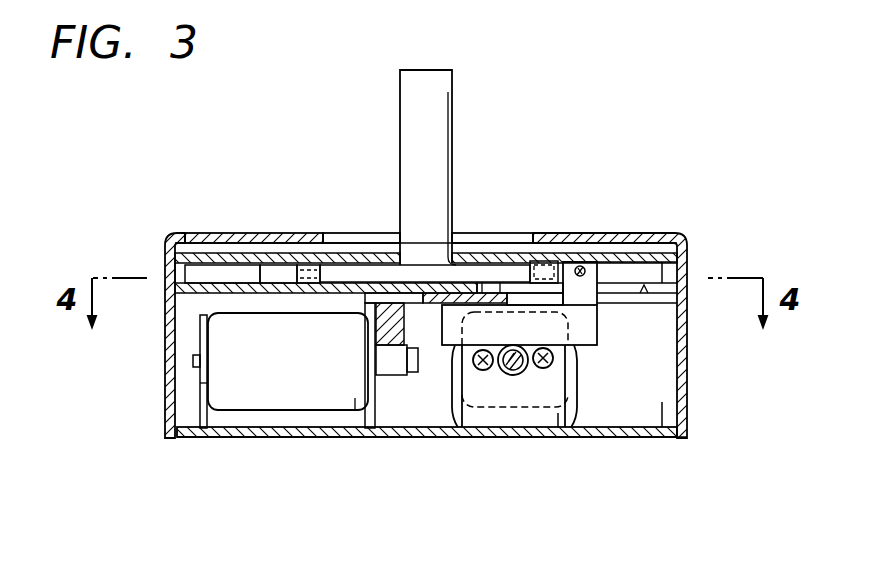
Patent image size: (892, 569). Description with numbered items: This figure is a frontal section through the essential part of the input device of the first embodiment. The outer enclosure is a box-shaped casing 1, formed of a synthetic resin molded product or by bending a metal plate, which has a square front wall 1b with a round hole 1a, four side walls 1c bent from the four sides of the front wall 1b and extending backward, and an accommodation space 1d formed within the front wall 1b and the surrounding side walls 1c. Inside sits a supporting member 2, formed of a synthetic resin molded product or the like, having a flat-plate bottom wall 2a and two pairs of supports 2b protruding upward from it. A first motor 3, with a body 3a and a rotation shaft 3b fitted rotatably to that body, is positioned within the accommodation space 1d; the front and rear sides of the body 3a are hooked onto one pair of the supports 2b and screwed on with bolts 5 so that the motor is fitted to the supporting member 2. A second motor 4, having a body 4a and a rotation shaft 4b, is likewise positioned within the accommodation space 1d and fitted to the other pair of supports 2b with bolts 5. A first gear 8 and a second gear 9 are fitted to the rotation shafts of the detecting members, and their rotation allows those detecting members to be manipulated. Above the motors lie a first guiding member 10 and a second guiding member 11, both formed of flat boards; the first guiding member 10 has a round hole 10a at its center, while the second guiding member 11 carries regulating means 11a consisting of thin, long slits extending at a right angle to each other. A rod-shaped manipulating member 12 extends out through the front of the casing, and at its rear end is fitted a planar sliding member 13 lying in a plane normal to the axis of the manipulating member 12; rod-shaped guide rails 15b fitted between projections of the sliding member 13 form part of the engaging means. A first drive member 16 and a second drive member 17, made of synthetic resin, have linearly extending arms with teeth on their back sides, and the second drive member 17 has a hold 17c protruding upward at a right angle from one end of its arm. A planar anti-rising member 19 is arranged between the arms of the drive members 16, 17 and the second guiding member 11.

The casing 1 is at (160, 233).
The round hole 1a is at (340, 240).
The front wall 1b is at (253, 233).
The side walls 1c is at (684, 378).
The accommodation space 1d is at (648, 437).
The supporting member 2 is at (332, 447).
The bottom wall 2a is at (270, 438).
The supports 2b is at (205, 410).
The first motor 3 is at (243, 420).
The body 3a is at (355, 398).
The rotation shaft 3b is at (193, 362).
The second motor 4 is at (586, 364).
The body 4a is at (452, 395).
The rotation shaft 4b is at (521, 395).
The bolts 5 is at (548, 368).
The first gear 8 is at (398, 375).
The second gear 9 is at (511, 376).
The first guiding member 10 is at (663, 248).
The round hole 10a is at (520, 250).
The second guiding member 11 is at (662, 283).
The regulating means 11a is at (644, 288).
The manipulating member 12 is at (455, 68).
The sliding member 13 is at (377, 261).
The guide rails 15b is at (583, 266).
The first drive member 16 is at (376, 332).
The second drive member 17 is at (605, 334).
The hold 17c is at (590, 290).
The anti-rising member 19 is at (500, 291).